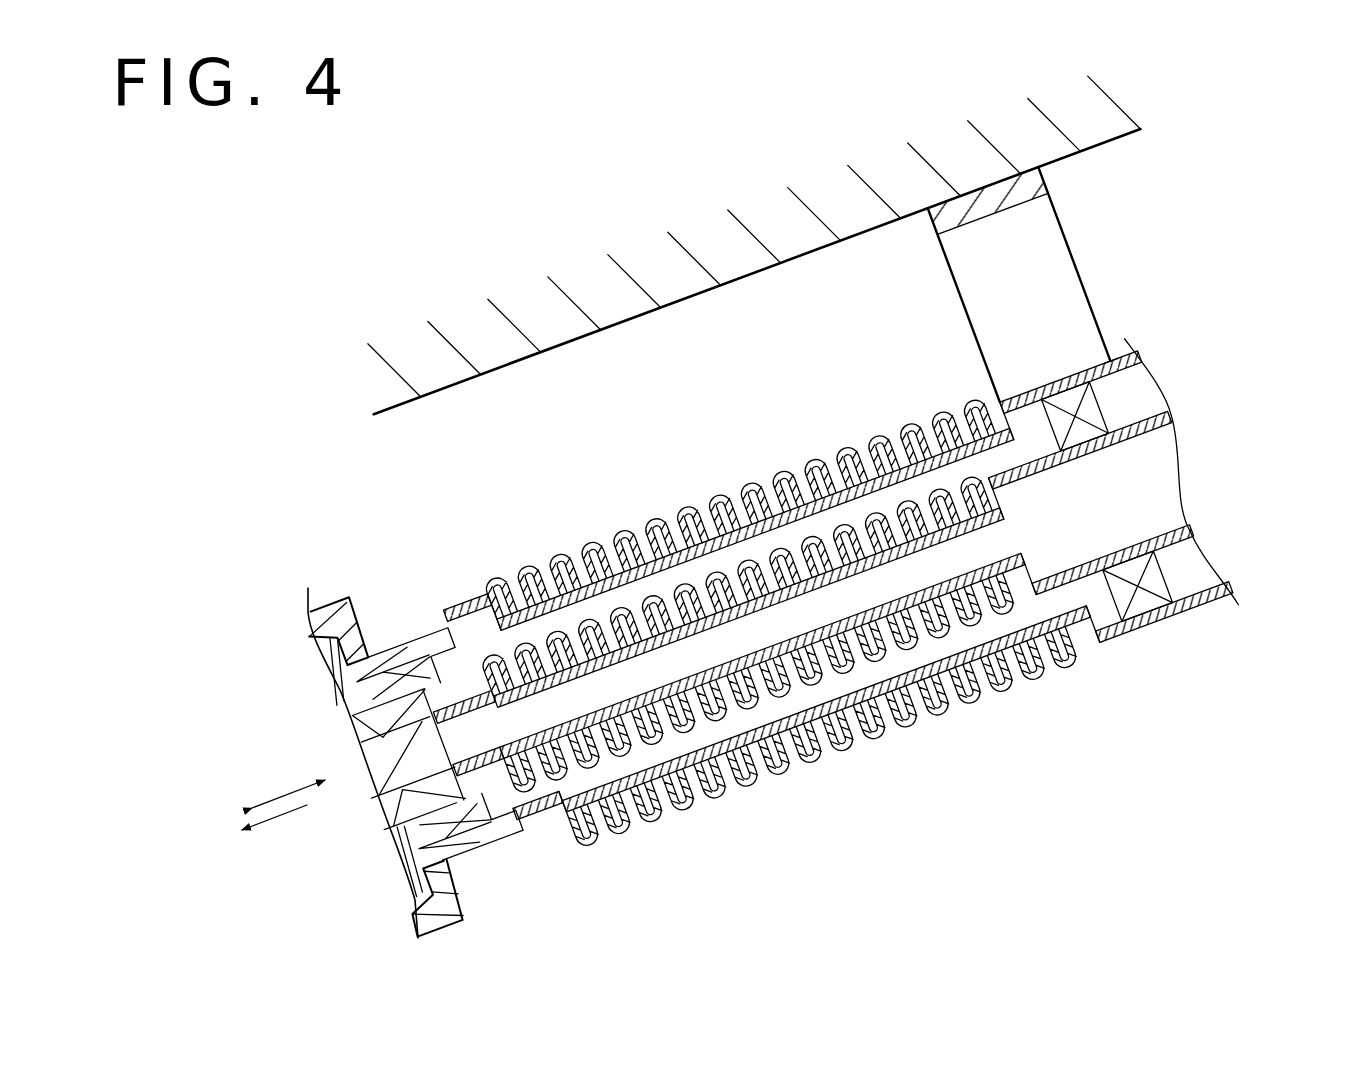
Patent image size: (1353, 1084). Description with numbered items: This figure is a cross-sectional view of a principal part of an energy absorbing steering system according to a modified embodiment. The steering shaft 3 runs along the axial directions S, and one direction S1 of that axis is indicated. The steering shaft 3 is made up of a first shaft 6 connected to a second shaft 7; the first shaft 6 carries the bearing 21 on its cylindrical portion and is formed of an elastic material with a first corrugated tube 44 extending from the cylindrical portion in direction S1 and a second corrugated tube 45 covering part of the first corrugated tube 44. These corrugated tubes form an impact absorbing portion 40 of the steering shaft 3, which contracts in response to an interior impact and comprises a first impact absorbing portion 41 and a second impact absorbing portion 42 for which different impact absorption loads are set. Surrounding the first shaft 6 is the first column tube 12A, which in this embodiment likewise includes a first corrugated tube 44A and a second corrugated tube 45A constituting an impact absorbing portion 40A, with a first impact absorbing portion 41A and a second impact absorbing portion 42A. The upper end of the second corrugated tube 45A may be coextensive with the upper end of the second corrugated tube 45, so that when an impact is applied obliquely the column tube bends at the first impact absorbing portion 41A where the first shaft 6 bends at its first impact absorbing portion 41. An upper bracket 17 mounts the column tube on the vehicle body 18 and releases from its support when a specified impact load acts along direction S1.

The vehicle body 18 is at (640, 331).
The upper bracket 17 is at (1068, 245).
The first column tube 12A is at (1114, 355).
The bearing 21 is at (1106, 409).
The steering shaft 3 is at (1170, 546).
The first shaft 6 is at (1112, 630).
The first corrugated tube 44A is at (797, 499).
The second corrugated tube 45A is at (744, 496).
The first corrugated tube 44 is at (803, 570).
The second corrugated tube 45 is at (678, 520).
The impact absorbing portion 40 is at (843, 724).
The first impact absorbing portion 41 is at (873, 707).
The second impact absorbing portion 42 is at (745, 712).
The impact absorbing portion 40A is at (873, 707).
The first impact absorbing portion 41A is at (947, 692).
The bellows tube 42A is at (848, 746).
The second shaft 7 is at (478, 790).
The axial directions S is at (283, 792).
The one axial direction S1 is at (285, 817).